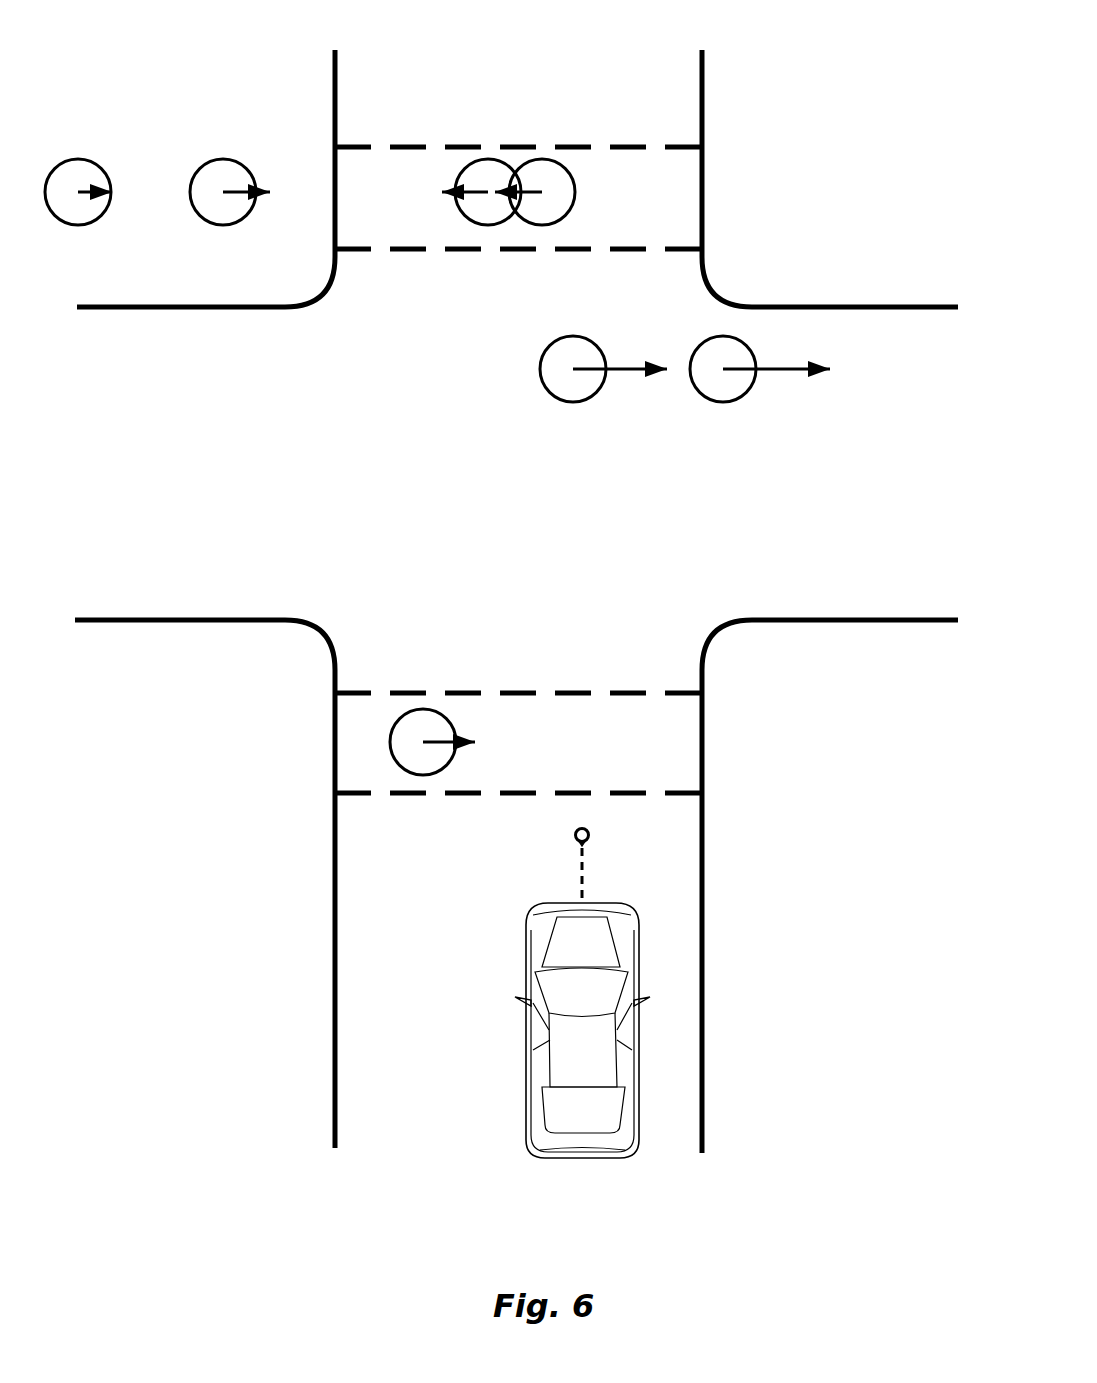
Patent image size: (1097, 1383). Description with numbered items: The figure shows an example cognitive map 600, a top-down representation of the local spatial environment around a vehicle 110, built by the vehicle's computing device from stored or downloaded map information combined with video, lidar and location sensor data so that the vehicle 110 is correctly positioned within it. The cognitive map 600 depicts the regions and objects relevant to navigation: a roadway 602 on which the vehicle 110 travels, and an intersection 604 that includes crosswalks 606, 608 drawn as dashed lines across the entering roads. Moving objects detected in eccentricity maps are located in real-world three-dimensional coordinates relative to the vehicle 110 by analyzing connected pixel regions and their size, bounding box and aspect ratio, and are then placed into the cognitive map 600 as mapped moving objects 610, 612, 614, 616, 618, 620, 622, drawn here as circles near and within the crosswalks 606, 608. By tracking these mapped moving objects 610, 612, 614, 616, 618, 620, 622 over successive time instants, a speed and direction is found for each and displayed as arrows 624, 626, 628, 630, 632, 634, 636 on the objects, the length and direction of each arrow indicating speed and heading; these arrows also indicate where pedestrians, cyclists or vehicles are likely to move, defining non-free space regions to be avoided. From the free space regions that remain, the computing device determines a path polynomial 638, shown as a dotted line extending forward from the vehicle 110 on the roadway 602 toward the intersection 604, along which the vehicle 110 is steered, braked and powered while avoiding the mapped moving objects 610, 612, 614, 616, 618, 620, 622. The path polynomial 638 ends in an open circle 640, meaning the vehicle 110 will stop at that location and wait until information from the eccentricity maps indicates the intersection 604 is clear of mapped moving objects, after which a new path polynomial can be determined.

The cognitive map 600 is at (522, 26).
The roadway 602 is at (428, 1142).
The intersection 604 is at (313, 467).
The crosswalk 606 is at (667, 198).
The crosswalk 608 is at (667, 737).
The mapped moving object 610 is at (423, 709).
The mapped moving object 612 is at (78, 160).
The mapped moving object 614 is at (223, 160).
The mapped moving object 616 is at (488, 160).
The mapped moving object 618 is at (541, 160).
The mapped moving object 620 is at (573, 336).
The mapped moving object 622 is at (723, 336).
The arrow 624 is at (423, 743).
The arrow 626 is at (78, 193).
The arrow 628 is at (223, 193).
The arrow 630 is at (488, 193).
The arrow 632 is at (542, 193).
The arrow 634 is at (573, 370).
The arrow 636 is at (723, 370).
The path polynomial 638 is at (578, 870).
The destination waypoint 640 is at (573, 831).
The vehicle 110 is at (578, 1160).